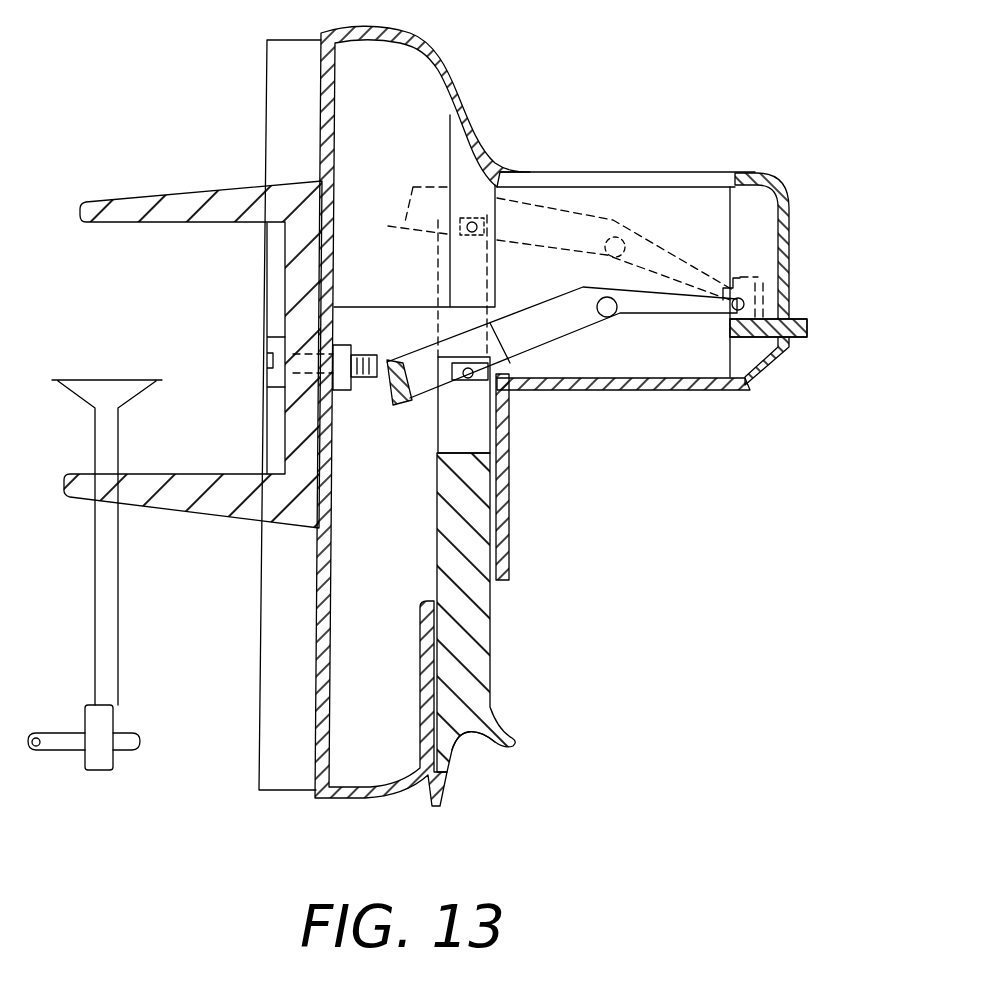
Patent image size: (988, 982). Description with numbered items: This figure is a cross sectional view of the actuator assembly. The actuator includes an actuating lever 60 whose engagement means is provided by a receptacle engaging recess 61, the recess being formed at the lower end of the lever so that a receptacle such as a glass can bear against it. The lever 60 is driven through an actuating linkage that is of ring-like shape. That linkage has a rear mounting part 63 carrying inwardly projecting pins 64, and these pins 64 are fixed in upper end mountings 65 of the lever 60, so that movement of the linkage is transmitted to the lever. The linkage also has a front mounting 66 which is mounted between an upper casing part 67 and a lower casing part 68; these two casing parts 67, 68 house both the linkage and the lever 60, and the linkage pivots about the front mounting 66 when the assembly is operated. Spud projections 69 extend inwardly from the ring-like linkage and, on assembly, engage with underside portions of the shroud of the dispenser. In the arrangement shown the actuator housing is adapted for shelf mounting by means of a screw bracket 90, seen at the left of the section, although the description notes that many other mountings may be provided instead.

The actuating lever 60 is at (473, 647).
The receptacle engaging recess 61 is at (471, 757).
The rear mounting part 63 is at (389, 358).
The inwardly projecting pins 64 is at (467, 384).
The upper end mountings 65 is at (433, 392).
The front mounting 66 is at (780, 258).
The upper casing part 67 is at (780, 194).
The lower casing part 68 is at (755, 382).
The spud projections 69 is at (612, 320).
The screw bracket 90 is at (160, 778).